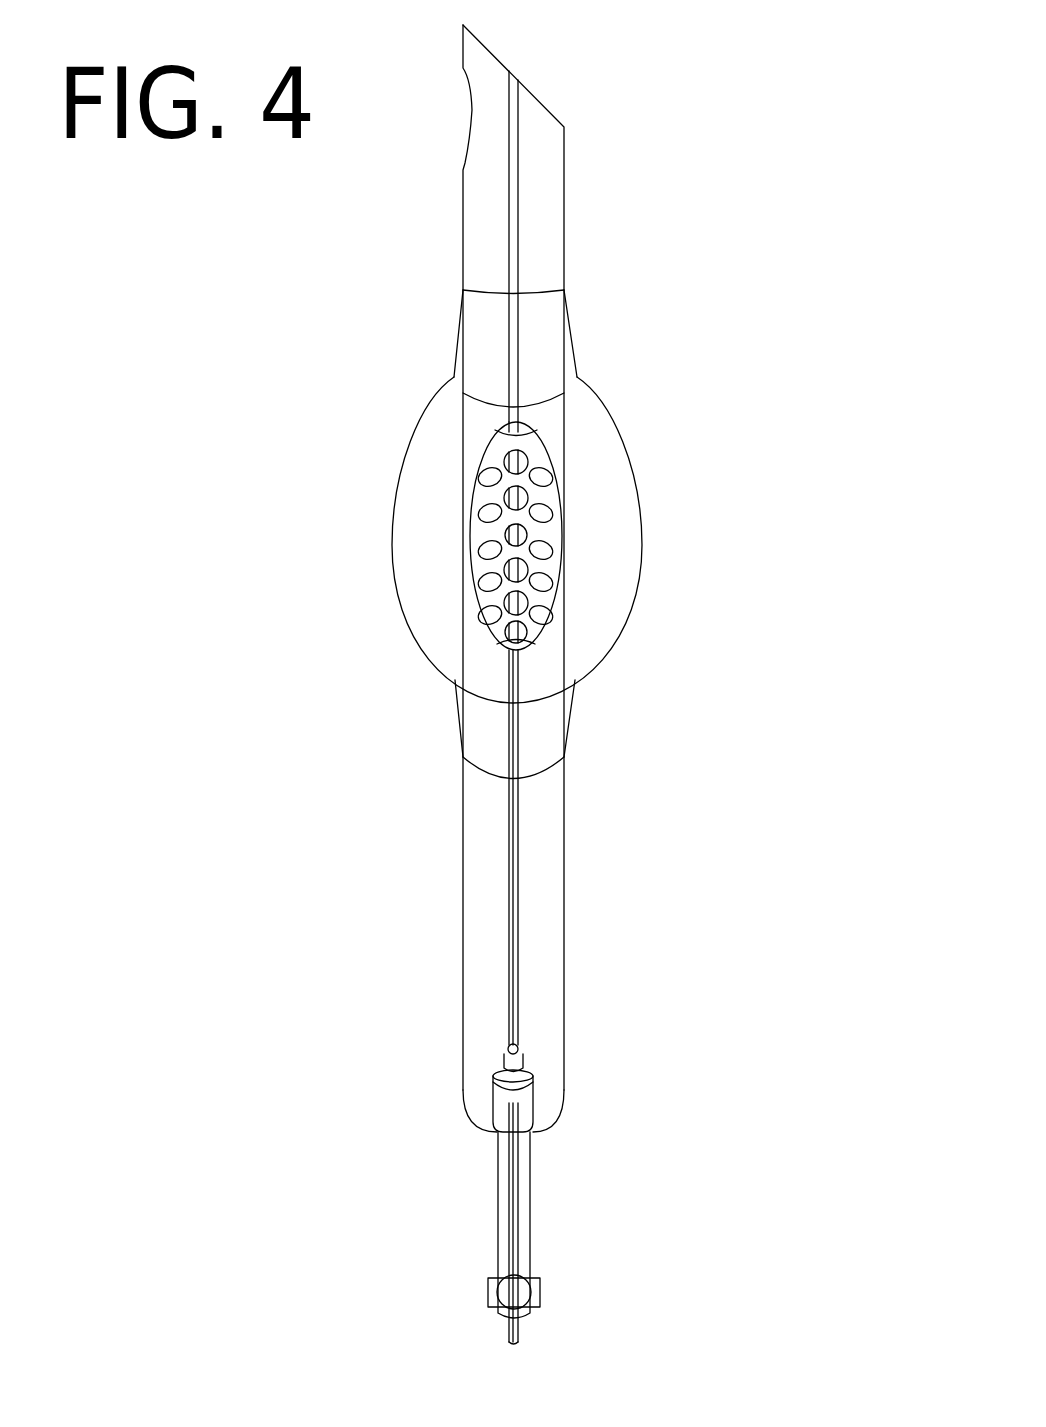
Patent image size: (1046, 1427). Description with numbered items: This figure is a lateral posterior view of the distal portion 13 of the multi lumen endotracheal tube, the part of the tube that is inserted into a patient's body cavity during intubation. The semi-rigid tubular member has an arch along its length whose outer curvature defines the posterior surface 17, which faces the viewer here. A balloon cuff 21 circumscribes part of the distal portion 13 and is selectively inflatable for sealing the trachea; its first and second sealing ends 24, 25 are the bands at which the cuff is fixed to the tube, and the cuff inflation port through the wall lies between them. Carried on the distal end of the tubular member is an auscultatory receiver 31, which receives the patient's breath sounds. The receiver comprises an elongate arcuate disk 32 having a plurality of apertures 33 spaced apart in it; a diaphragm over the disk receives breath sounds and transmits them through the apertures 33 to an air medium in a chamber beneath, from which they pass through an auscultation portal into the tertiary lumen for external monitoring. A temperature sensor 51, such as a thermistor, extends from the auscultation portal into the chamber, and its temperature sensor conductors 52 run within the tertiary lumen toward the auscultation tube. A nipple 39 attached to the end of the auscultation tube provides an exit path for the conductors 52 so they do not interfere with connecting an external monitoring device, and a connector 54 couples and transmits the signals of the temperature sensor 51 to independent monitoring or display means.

The distal portion 13 is at (712, 513).
The posterior surface 17 is at (483, 992).
The balloon cuff 21 is at (627, 443).
The first sealing end 24 is at (543, 333).
The second sealing end 25 is at (538, 723).
The auscultatory receiver 31 is at (560, 598).
The elongate arcuate disk 32 is at (492, 443).
The apertures 33 is at (490, 607).
The nipple 39 is at (523, 1102).
The temperature sensor 51 is at (503, 540).
The temperature sensor conductors 52 is at (515, 1243).
The connector 54 is at (490, 1293).